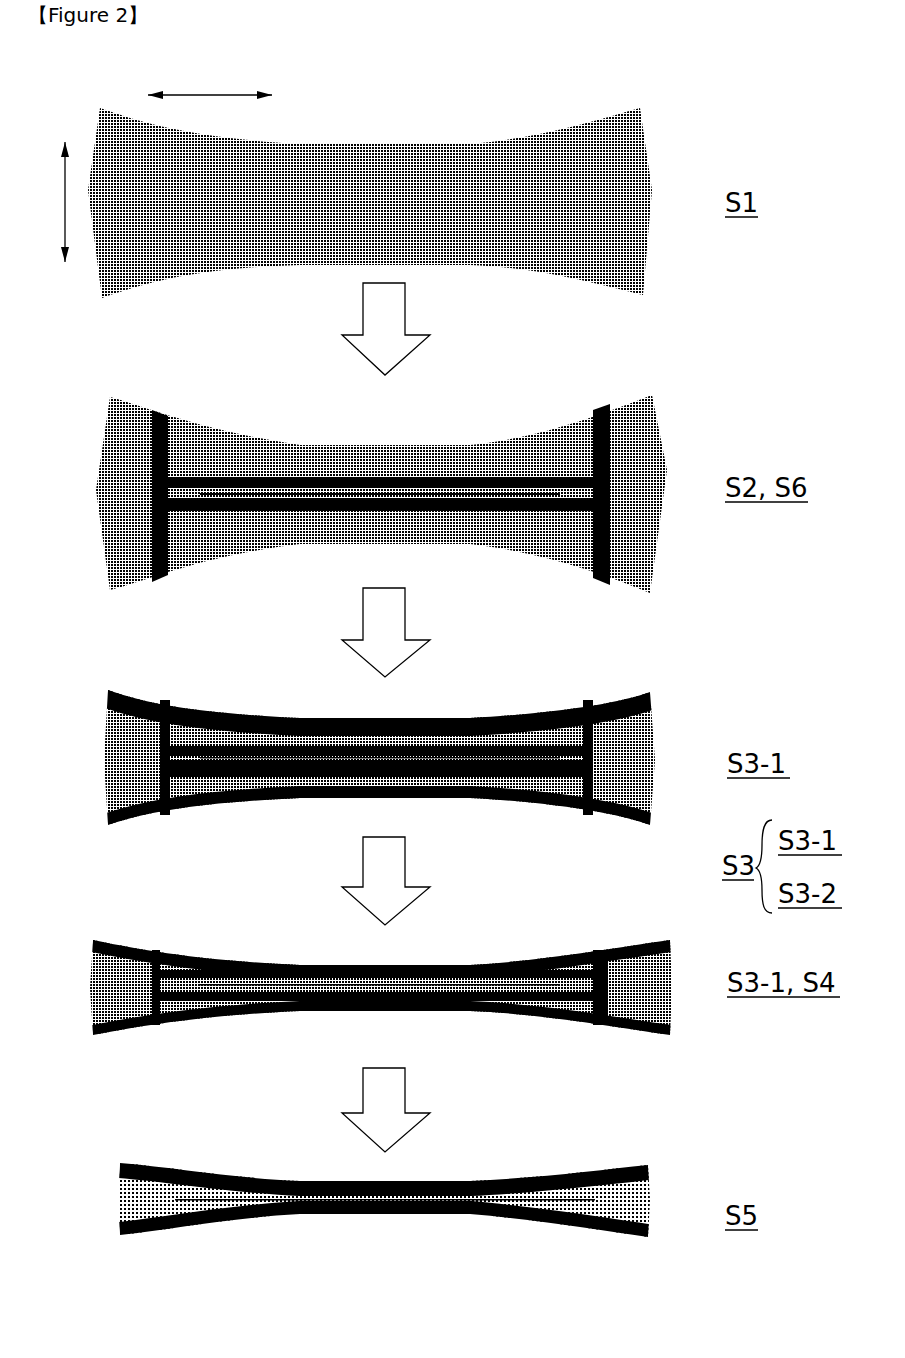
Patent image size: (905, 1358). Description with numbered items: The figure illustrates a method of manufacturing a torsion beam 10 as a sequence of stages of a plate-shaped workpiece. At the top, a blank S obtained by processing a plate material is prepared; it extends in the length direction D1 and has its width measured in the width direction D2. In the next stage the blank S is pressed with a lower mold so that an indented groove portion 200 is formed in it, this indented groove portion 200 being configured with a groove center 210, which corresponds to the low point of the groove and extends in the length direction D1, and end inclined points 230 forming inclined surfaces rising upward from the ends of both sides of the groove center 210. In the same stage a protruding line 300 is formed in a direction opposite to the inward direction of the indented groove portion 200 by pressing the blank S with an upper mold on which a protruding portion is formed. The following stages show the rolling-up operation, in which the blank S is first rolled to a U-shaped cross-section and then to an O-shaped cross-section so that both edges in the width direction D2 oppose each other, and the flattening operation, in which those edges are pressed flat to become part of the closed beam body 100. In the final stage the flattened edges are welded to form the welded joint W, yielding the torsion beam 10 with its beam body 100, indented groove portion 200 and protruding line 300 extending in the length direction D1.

The blank S is at (434, 136).
The length direction D1 is at (210, 82).
The width direction D2 is at (47, 202).
The indented groove portion 200 is at (240, 478).
The protruding line 300 is at (290, 490).
The end inclined points 230 is at (178, 540).
The groove center 210 is at (255, 512).
The beam body 100 is at (598, 945).
The torsion beam 10 is at (631, 1158).
The welded joint W is at (362, 1218).